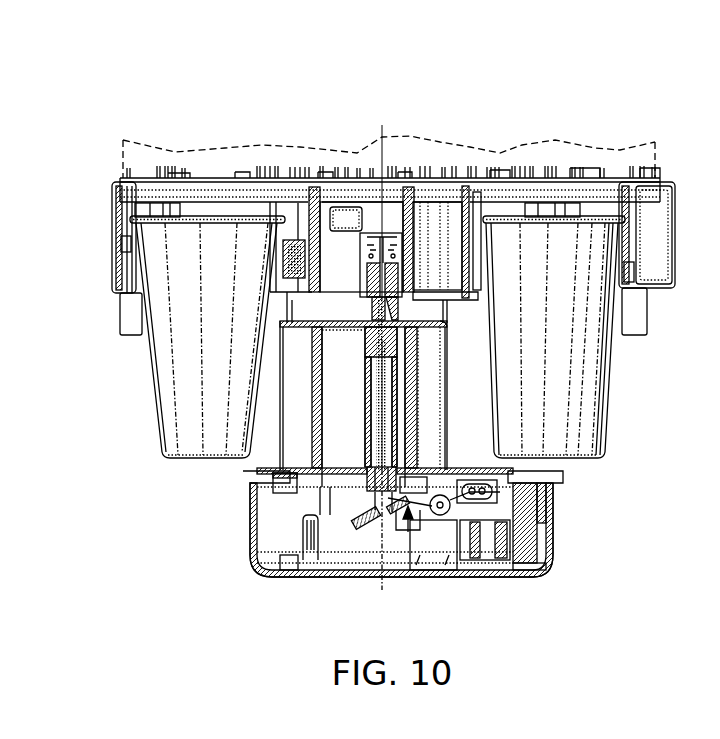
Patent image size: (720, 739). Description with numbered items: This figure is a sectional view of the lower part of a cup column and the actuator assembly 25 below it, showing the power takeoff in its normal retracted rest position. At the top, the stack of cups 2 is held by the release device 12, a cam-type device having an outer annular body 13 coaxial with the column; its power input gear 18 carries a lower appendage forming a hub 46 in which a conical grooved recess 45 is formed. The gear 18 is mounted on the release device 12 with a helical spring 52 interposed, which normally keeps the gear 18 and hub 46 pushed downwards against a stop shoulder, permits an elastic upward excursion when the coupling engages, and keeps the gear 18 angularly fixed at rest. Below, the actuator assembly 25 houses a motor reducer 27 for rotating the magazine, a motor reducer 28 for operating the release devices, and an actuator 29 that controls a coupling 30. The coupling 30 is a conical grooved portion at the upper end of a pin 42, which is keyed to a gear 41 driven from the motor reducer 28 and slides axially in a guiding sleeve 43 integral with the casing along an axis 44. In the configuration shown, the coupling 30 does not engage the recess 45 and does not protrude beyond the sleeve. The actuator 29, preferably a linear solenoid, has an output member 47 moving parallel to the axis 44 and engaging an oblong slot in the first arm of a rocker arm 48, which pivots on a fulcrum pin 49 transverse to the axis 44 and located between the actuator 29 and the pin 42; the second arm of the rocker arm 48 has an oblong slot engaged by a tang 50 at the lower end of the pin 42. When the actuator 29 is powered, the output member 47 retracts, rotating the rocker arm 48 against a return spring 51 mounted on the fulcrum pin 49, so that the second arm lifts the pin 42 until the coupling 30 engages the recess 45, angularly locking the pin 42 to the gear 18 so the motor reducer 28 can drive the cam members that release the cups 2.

The cup 2 is at (555, 398).
The release device 12 is at (112, 232).
The outer annular body 13 is at (403, 253).
The power input gear 18 is at (360, 267).
The actuator assembly 25 is at (581, 589).
The motor reducer 27 is at (290, 535).
The motor reducer 28 is at (423, 550).
The actuator 29 is at (579, 523).
The coupling 30 is at (388, 343).
The gear 41 is at (368, 476).
The pin 42 is at (375, 428).
The guiding sleeve 43 is at (365, 384).
The axis 44 is at (382, 135).
The conical grooved recess 45 is at (368, 311).
The hub 46 is at (392, 300).
The output member 47 is at (576, 500).
The rocker arm 48 is at (408, 523).
The fulcrum pin 49 is at (440, 512).
The tang 50 is at (376, 499).
The return spring 51 is at (447, 500).
The helical spring 52 is at (370, 237).